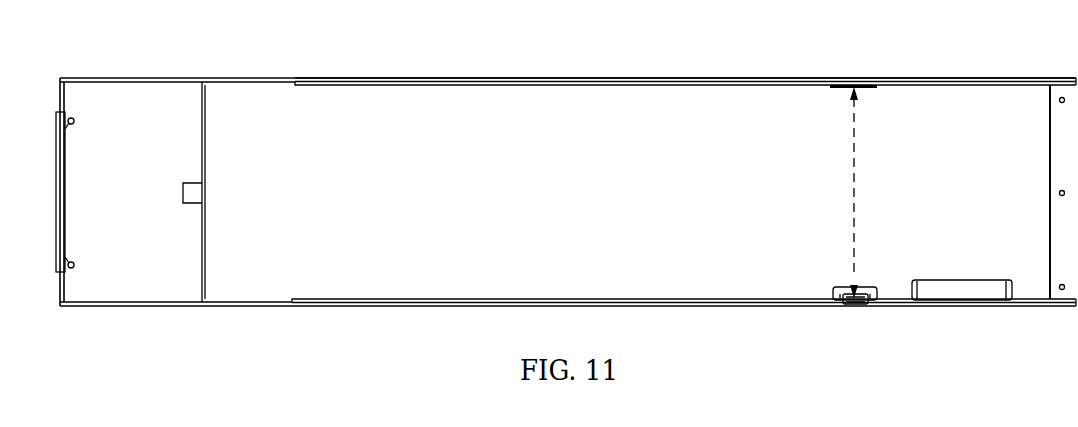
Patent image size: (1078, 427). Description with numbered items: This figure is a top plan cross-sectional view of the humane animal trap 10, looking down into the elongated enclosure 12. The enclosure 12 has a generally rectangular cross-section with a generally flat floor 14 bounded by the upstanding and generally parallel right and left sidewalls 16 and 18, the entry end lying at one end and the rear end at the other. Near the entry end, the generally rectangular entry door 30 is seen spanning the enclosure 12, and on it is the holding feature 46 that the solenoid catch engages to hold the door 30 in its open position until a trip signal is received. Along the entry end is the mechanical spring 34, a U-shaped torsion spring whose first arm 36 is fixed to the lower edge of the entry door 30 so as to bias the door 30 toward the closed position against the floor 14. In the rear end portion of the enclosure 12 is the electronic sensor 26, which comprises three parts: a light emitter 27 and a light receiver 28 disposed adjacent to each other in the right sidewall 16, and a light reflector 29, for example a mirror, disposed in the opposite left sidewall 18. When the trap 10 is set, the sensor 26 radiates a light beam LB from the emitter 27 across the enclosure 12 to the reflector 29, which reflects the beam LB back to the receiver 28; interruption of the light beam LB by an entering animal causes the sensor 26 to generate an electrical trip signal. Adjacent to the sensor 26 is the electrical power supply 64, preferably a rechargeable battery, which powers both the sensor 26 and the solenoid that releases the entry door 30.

The animal trap 10 is at (702, 37).
The enclosure 12 is at (268, 77).
The floor 14 is at (543, 197).
The right sidewall 16 is at (582, 83).
The left sidewall 18 is at (433, 303).
The electronic sensor 26 is at (837, 298).
The light emitter 27 is at (850, 287).
The light receiver 28 is at (864, 288).
The light reflector 29 is at (863, 82).
The entry door 30 is at (192, 132).
The mechanical spring 34 is at (66, 257).
The first arm 36 is at (63, 177).
The holding feature 46 is at (192, 192).
The electrical power supply 64 is at (975, 282).
The light beam LB is at (855, 178).